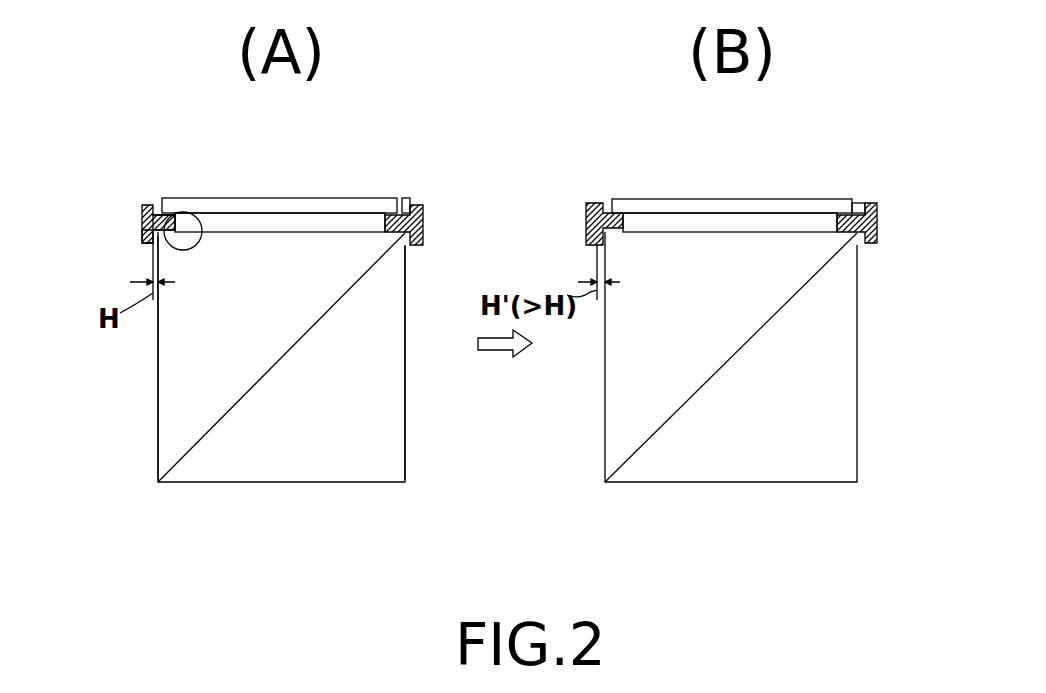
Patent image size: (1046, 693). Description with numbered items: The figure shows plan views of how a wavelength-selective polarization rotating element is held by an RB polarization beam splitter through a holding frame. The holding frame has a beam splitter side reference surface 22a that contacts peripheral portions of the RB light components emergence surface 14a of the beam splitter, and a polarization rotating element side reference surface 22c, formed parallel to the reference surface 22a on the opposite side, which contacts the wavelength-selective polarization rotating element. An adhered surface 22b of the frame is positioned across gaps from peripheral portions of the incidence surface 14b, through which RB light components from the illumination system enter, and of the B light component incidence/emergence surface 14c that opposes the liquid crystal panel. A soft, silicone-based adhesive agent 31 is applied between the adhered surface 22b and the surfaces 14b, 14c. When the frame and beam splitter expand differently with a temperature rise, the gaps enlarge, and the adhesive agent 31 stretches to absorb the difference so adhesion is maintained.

The RB light components emergence surface 14a is at (268, 232).
The incidence surface 14b is at (405, 410).
The B light component incidence/emergence surface 14c is at (157, 420).
The beam splitter side reference surface 22a is at (197, 213).
The adhered surface 22b is at (396, 243).
The polarization rotating element side reference surface 22c is at (395, 198).
The adhesive agent 31 is at (146, 236).